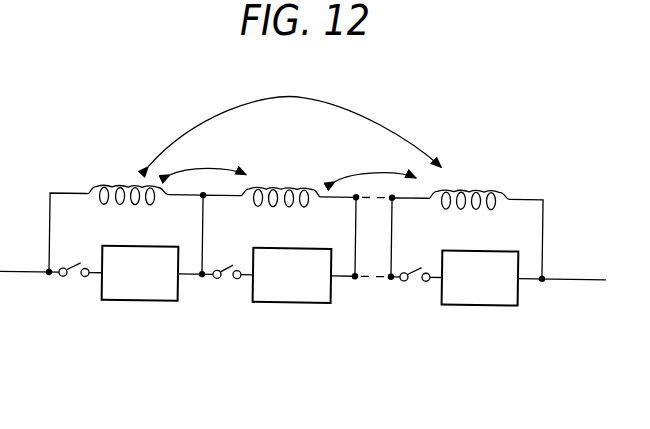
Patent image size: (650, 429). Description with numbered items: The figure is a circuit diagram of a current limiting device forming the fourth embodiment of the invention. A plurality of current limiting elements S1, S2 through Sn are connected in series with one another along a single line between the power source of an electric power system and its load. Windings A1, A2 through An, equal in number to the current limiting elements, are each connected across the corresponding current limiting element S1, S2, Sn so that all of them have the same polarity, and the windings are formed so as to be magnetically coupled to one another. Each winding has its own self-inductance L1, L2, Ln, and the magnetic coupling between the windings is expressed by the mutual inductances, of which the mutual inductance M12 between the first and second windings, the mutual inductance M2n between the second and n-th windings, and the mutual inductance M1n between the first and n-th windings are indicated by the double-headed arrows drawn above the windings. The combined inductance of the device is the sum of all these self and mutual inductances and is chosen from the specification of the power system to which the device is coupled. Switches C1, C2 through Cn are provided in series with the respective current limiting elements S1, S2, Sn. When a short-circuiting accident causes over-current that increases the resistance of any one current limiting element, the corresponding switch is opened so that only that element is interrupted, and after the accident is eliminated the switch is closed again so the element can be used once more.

The winding A1 is at (100, 184).
The winding A2 is at (283, 183).
The winding An is at (489, 185).
The self-inductance of winding A1 L1 is at (126, 213).
The self-inductance of winding A2 L2 is at (279, 214).
The self-inductance of winding An Ln is at (467, 217).
The mutual inductance between windings A1 and An M1n is at (295, 117).
The mutual inductance between windings A1 and A2 M12 is at (214, 157).
The mutual inductance between windings A2 and An M2n is at (373, 161).
The switch C1 is at (72, 278).
The switch C2 is at (226, 277).
The switch Cn is at (414, 278).
The current limiting element S1 is at (136, 301).
The current limiting element S2 is at (290, 300).
The current limiting element Sn is at (477, 301).